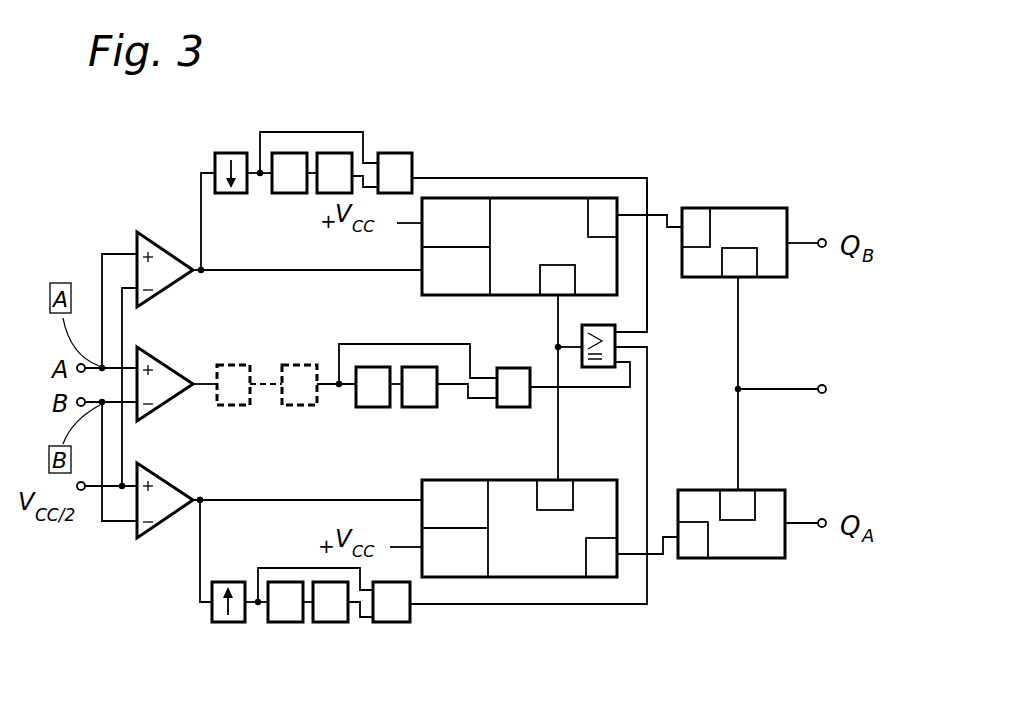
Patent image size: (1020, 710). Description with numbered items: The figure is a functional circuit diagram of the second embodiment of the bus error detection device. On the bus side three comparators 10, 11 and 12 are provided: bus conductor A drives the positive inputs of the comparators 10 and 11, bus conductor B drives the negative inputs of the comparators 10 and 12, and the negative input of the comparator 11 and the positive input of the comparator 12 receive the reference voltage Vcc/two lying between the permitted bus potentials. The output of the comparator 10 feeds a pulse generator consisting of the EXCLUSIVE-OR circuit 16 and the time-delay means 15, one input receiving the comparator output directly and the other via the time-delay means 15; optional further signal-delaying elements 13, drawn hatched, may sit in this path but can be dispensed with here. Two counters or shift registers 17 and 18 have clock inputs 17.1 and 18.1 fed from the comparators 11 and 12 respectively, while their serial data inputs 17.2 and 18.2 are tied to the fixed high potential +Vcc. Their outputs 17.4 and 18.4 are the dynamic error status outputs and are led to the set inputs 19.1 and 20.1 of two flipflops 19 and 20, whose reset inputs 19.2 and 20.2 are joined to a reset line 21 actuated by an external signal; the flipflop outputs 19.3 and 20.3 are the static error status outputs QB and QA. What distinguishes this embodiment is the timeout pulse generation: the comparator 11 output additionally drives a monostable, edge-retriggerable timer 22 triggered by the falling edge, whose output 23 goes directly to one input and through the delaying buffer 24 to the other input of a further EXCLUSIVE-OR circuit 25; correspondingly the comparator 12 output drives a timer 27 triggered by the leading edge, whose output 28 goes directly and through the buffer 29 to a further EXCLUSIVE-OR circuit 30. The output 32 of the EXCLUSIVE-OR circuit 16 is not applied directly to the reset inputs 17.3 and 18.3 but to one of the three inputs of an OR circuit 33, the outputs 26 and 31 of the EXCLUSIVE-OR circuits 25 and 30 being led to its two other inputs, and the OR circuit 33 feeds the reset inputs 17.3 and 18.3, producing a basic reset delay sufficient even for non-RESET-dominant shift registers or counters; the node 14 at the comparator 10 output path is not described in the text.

The comparator 10 is at (174, 378).
The comparator 11 is at (178, 265).
The comparator 12 is at (178, 512).
The signal-delaying elements 13 is at (283, 406).
The node 14 is at (339, 392).
The time-delay means 15 is at (425, 408).
The EXCLUSIVE-OR circuit 16 is at (508, 408).
The counter or shift register 17 is at (475, 229).
The clock input 17.1 is at (432, 283).
The serial data input 17.2 is at (453, 198).
The reset input 17.3 is at (545, 288).
The output 17.4 is at (598, 198).
The counter or shift register 18 is at (532, 545).
The clock input 18.1 is at (470, 487).
The serial data input 18.2 is at (448, 578).
The reset input 18.3 is at (568, 480).
The output 18.4 is at (597, 572).
The flipflop 19 is at (781, 233).
The set input 19.1 is at (692, 208).
The reset input 19.2 is at (725, 277).
The output 19.3 is at (812, 240).
The flipflop 20 is at (775, 544).
The set input 20.1 is at (700, 560).
The reset input 20.2 is at (752, 490).
The output 20.3 is at (812, 522).
The reset line 21 is at (782, 387).
The monostable, edge-retriggerable timer 22 is at (215, 157).
The output 23 is at (258, 183).
The logic gate or switching amplifier stage 24 is at (333, 194).
The EXCLUSIVE-OR circuit 25 is at (388, 155).
The output 26 is at (632, 176).
The monostable, edge-retriggerable timer 27 is at (213, 620).
The output 28 is at (258, 604).
The logic gate or switching amplifier stage 29 is at (327, 623).
The EXCLUSIVE-OR circuit 30 is at (385, 623).
The output 31 is at (652, 470).
The output 32 is at (572, 388).
The OR circuit 33 is at (590, 326).